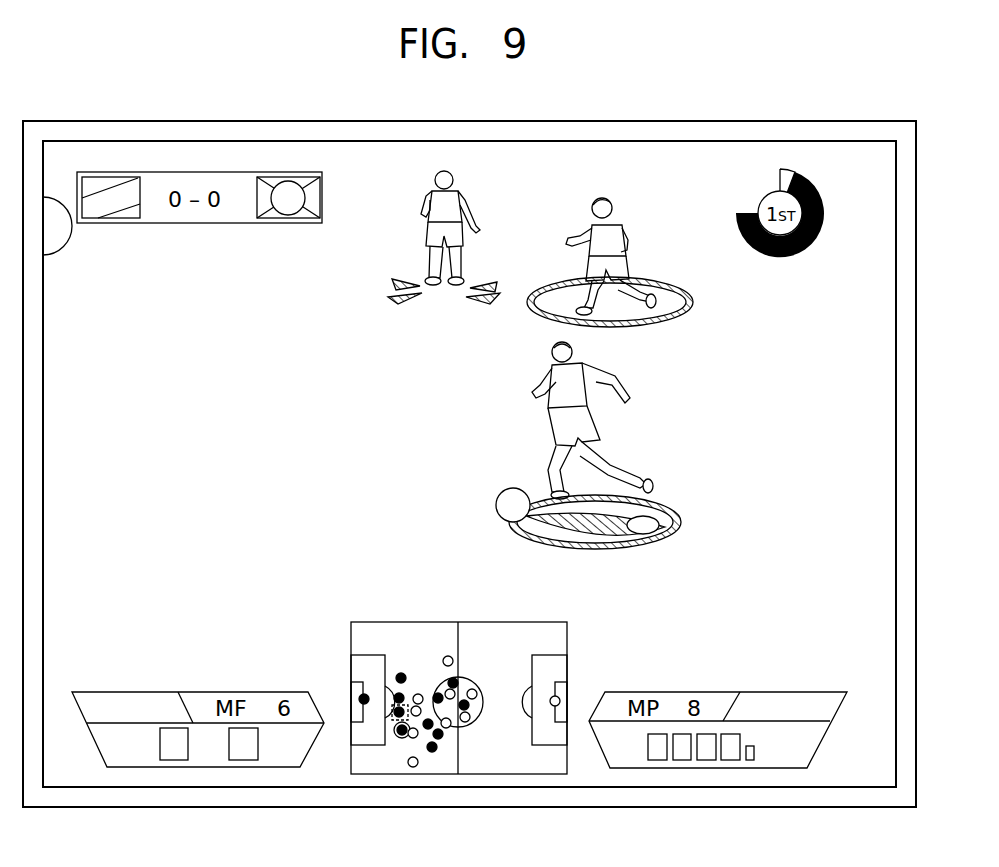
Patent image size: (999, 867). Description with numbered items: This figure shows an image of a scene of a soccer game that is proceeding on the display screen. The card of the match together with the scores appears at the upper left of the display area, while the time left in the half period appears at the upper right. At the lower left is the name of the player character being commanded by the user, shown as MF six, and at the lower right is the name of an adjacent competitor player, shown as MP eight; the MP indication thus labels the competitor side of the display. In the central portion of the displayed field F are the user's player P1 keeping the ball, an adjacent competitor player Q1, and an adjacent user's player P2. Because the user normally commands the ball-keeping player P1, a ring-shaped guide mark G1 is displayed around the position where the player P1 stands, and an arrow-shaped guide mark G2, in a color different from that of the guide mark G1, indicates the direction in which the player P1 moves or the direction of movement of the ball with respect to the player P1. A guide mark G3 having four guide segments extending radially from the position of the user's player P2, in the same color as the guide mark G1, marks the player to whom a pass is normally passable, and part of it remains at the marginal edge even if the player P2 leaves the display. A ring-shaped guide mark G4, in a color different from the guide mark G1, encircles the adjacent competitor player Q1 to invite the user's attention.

The field F is at (865, 447).
The user's player P1 is at (596, 372).
The adjacent user's player P2 is at (457, 200).
The adjacent competitor player Q1 is at (619, 225).
The ring-shaped guide mark G1 is at (680, 520).
The arrow-shaped guide mark G2 is at (588, 530).
The guide mark G3 is at (430, 298).
The ring-shaped guide mark G4 is at (690, 302).
The mini-map of field MP is at (548, 765).